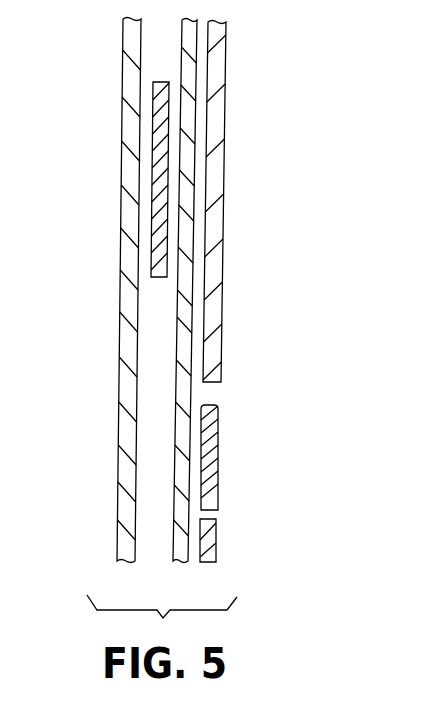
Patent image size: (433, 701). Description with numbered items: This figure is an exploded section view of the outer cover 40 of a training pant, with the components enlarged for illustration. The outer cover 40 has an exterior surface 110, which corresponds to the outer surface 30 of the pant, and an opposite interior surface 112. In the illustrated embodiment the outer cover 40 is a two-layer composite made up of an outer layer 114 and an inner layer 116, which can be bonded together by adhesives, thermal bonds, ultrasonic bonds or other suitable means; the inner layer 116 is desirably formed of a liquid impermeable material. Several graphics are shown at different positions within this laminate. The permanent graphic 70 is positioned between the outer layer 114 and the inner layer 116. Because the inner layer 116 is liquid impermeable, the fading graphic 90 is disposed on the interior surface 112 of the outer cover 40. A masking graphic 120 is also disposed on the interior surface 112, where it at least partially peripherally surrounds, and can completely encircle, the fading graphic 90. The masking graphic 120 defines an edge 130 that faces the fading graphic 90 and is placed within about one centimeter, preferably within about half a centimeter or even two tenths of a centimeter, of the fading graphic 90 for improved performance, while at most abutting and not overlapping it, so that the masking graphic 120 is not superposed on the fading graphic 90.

The outer cover 40 is at (116, 59).
The outer surface 30 is at (118, 343).
The permanent graphic 70 is at (152, 164).
The interior surface 112 is at (193, 390).
The masking graphic 120 is at (227, 184).
The fading graphic 90 is at (218, 443).
The edge 130 is at (216, 517).
The outer layer 114 is at (118, 428).
The inner layer 116 is at (176, 475).
The exterior surface 110 is at (116, 541).